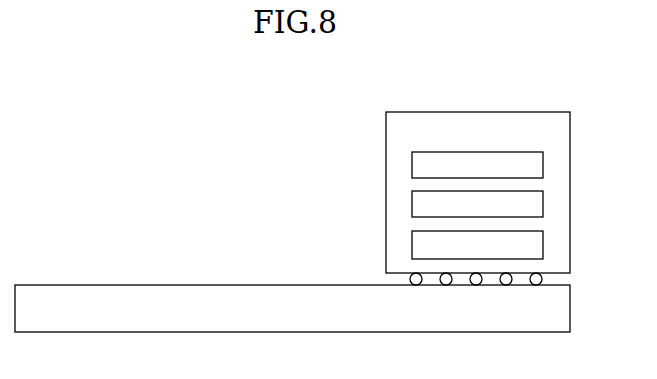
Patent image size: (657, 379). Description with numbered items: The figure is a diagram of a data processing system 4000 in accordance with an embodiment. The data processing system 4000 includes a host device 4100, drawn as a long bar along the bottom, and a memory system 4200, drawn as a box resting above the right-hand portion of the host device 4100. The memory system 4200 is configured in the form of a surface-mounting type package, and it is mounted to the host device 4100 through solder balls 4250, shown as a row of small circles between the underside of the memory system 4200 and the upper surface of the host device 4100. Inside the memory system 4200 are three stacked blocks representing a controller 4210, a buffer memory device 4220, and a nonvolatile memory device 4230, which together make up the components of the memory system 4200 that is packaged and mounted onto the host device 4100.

The data processing system 4000 is at (90, 84).
The host device 4100 is at (292, 308).
The memory system 4200 is at (478, 192).
The controller 4210 is at (477, 165).
The buffer memory device 4220 is at (477, 204).
The nonvolatile memory device 4230 is at (477, 245).
The solder balls 4250 is at (553, 279).